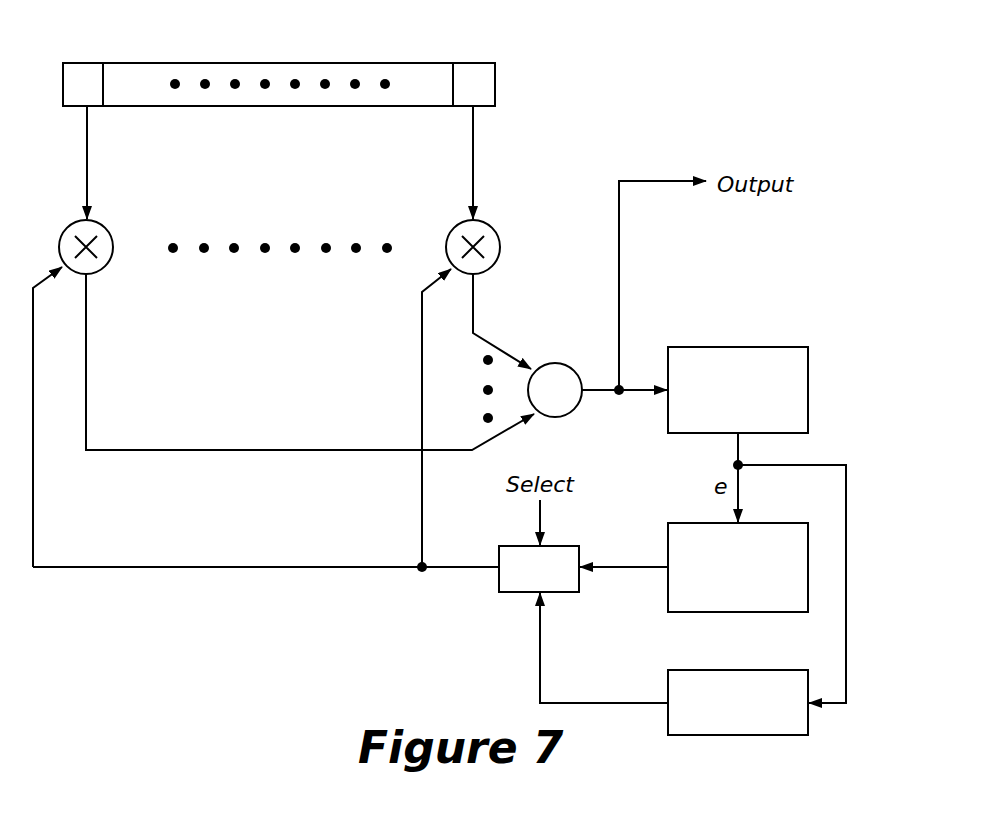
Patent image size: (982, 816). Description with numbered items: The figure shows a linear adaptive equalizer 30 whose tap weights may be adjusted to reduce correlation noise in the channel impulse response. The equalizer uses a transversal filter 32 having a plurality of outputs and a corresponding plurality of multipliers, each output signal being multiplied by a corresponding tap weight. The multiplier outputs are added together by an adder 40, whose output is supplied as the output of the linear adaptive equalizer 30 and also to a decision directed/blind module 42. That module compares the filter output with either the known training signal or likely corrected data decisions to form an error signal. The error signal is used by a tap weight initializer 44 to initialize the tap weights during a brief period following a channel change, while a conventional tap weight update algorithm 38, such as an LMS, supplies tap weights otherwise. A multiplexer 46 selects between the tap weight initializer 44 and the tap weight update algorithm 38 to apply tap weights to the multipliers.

The linear adaptive equalizer 30 is at (596, 66).
The transversal filter 32 is at (384, 62).
The tap weight update algorithm 38 is at (776, 523).
The adder 40 is at (569, 364).
The decision directed/blind module 42 is at (776, 347).
The tap weight initializer 44 is at (776, 670).
The multiplexer 46 is at (572, 546).